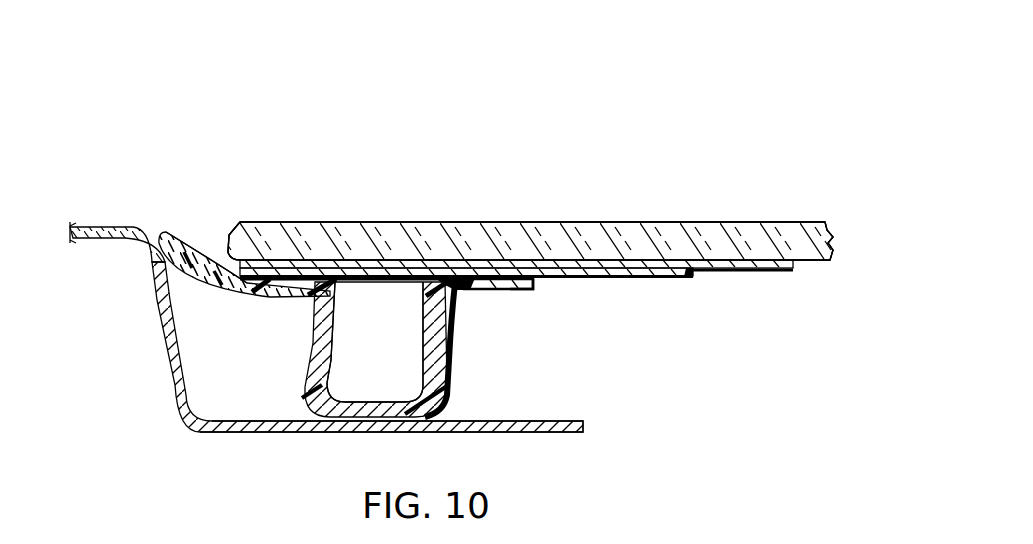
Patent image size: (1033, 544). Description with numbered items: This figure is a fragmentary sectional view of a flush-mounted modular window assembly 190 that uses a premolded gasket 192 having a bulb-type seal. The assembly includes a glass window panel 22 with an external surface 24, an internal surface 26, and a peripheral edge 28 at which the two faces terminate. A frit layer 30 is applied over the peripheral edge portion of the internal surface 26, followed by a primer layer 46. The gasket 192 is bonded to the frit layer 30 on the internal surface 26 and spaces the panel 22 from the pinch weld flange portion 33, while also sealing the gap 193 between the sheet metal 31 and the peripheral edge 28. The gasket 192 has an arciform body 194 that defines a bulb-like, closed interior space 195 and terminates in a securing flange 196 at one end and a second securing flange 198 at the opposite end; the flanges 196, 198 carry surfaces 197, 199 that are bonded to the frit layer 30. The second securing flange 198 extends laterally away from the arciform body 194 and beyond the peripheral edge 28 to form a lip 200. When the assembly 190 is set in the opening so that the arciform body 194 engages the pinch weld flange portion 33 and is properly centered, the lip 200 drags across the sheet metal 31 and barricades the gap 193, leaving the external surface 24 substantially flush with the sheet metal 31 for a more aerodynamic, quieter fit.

The modular window assembly 190 is at (766, 157).
The glass window panel 22 is at (674, 208).
The external surface 24 is at (593, 221).
The peripheral edge 28 is at (218, 226).
The internal surface 26 is at (810, 268).
The frit layer 30 is at (743, 274).
The primer layer 46 is at (637, 279).
The sheet metal 31 is at (103, 242).
The second securing flange 198 is at (295, 283).
The pinch weld flange portion 33 is at (552, 418).
The gap 193 is at (184, 222).
The lip 200 is at (247, 265).
The surface 199 is at (262, 283).
The arciform body 194 is at (457, 392).
The closed interior space 195 is at (353, 400).
The premolded gasket 192 is at (468, 355).
The securing flange 196 is at (477, 292).
The surface 197 is at (518, 291).